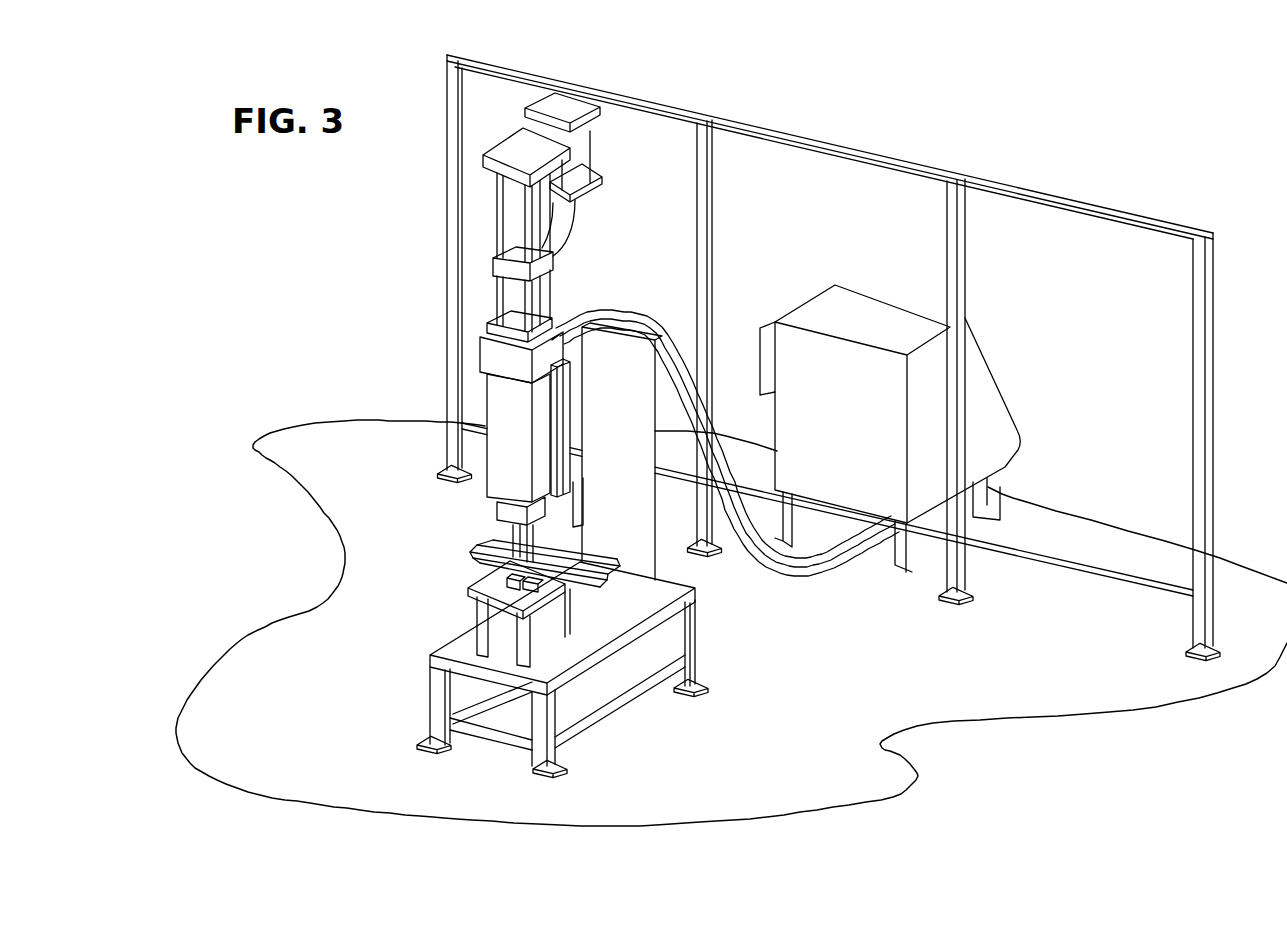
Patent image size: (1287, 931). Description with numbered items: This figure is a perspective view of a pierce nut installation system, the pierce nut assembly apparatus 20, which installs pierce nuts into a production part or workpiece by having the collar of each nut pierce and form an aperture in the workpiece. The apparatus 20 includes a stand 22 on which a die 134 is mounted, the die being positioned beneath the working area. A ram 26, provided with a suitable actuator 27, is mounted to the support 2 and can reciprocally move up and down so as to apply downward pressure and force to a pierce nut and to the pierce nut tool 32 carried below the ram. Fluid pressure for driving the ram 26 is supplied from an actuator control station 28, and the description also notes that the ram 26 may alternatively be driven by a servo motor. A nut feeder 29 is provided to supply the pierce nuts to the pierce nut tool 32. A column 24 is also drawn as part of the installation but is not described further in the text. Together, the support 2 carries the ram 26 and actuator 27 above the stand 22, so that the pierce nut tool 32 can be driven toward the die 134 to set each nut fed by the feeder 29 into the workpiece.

The support 2 is at (789, 133).
The pierce nut assembly apparatus 20 is at (1043, 170).
The stand 22 is at (418, 663).
The column 24 is at (647, 528).
The ram 26 is at (512, 410).
The actuator 27 is at (516, 208).
The actuator control station 28 is at (580, 150).
The nut feeder 29 is at (858, 303).
The pierce nut tool 32 is at (487, 528).
The die 134 is at (503, 577).